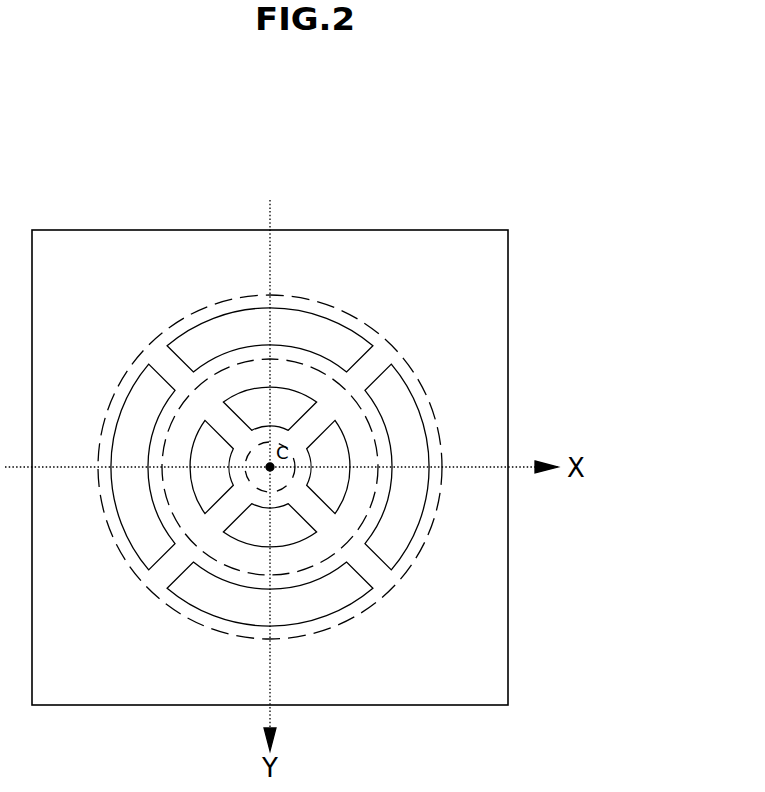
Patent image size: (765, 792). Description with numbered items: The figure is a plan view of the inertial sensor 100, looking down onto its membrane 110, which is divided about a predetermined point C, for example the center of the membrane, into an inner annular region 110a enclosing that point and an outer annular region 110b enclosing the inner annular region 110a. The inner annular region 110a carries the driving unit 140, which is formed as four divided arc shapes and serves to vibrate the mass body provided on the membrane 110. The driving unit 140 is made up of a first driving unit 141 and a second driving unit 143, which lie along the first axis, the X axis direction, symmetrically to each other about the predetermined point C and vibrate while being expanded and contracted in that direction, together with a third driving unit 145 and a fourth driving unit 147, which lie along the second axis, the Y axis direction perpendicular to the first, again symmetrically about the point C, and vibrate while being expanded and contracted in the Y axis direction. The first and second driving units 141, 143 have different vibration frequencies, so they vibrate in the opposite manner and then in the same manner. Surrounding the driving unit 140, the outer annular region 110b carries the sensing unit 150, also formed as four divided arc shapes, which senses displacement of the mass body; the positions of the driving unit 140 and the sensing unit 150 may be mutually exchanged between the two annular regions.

The inertial sensor 100 is at (93, 96).
The membrane 110 is at (483, 340).
The inner annular region 110a is at (238, 557).
The outer annular region 110b is at (150, 583).
The driving unit 140 is at (404, 161).
The first driving unit 141 is at (212, 443).
The second driving unit 143 is at (330, 443).
The third driving unit 145 is at (283, 403).
The fourth driving unit 147 is at (297, 528).
The sensing unit 150 is at (115, 390).